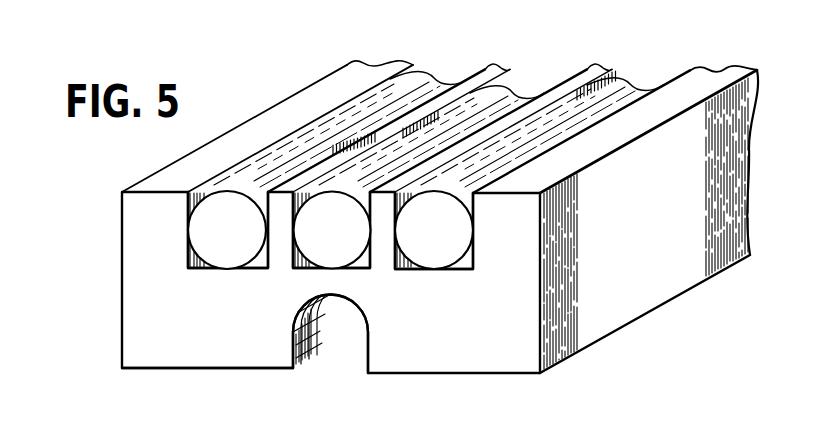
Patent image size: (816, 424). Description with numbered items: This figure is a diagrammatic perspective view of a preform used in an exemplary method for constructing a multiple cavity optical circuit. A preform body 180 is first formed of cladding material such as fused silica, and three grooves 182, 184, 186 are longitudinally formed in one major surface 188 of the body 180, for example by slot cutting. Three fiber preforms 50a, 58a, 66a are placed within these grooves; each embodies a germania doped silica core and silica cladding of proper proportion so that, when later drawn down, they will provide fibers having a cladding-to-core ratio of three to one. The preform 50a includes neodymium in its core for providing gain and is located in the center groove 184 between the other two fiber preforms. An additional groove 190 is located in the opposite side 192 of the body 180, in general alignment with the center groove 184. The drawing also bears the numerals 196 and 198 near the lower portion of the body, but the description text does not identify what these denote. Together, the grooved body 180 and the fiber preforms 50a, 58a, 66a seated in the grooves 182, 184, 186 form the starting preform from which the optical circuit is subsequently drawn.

The preform body 180 is at (122, 258).
The groove 182 is at (207, 268).
The center groove 184 is at (297, 270).
The groove 186 is at (403, 270).
The major surface 188 is at (272, 117).
The additional groove 190 is at (367, 357).
The opposite side 192 is at (198, 368).
The fiber preform 58a is at (418, 87).
The fiber preform 50a is at (522, 95).
The fiber preform 66a is at (643, 87).
The side surface 196 is at (552, 299).
The side surface 198 is at (695, 251).